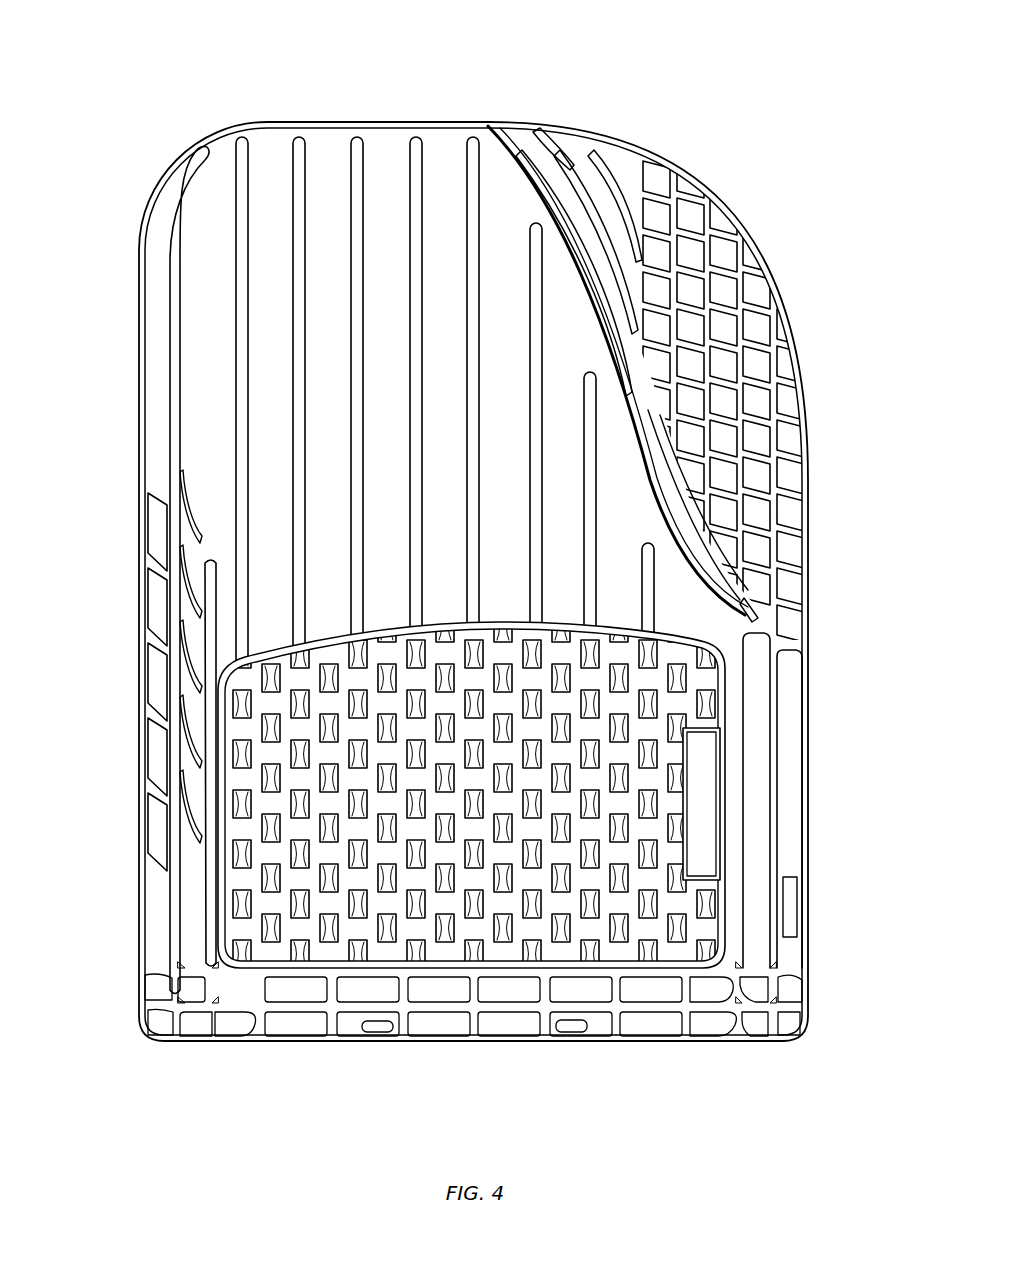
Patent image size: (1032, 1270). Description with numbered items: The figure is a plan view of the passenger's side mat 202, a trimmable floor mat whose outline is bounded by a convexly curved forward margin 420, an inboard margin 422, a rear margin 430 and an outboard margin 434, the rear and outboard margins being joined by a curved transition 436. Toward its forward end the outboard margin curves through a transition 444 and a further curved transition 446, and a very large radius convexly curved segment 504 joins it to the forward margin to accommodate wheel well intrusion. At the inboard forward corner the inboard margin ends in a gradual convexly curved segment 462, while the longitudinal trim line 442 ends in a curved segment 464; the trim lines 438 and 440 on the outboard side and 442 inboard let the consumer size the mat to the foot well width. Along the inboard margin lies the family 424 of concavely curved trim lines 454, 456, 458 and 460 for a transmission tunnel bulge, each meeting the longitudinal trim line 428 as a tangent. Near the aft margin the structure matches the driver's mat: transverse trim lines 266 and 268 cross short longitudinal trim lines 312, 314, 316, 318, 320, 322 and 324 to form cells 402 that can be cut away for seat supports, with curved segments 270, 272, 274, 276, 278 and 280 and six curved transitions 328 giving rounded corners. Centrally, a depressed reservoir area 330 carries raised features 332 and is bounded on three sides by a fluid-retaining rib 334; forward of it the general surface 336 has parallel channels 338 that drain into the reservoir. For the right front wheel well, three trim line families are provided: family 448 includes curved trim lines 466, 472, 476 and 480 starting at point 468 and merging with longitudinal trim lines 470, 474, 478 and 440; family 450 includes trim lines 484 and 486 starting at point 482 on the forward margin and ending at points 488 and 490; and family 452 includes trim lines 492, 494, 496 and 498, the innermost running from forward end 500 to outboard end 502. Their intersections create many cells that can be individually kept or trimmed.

The passenger's side mat 202 is at (276, 58).
The forward margin 420 is at (385, 122).
The forward end 500 is at (495, 128).
The curved trim line 492 is at (520, 130).
The point 482 is at (545, 135).
The curved trim line 496 is at (596, 160).
The curved trim line 494 is at (585, 215).
The curved trim line 498 is at (690, 200).
The curved transition 446 is at (750, 235).
The convexly curved segment 504 is at (770, 250).
The longitudinal trim line 440 is at (740, 285).
The third family of curved trim lines 452 is at (812, 314).
The straight longitudinal trim line 478 is at (795, 348).
The transition 444 is at (812, 372).
The outboard end 502 is at (802, 402).
The longitudinal straight trim line 474 is at (740, 447).
The point 490 is at (810, 472).
The trim line 476 is at (748, 517).
The point 488 is at (810, 580).
The curved trim line 480 is at (760, 607).
The point 468 is at (782, 680).
The outboard margin 434 is at (810, 745).
The longitudinal cut line 438 is at (782, 800).
The curved transition 436 is at (792, 1030).
The rib 334 is at (222, 830).
The curved transitions 328 is at (800, 1000).
The cells 402 is at (732, 1010).
The short longitudinal trim line 322 is at (630, 1030).
The short longitudinal trim line 324 is at (690, 1032).
The short longitudinal trim line 320 is at (505, 1022).
The rear margin 430 is at (525, 1002).
The short longitudinal trim line 318 is at (452, 1032).
The short longitudinal trim line 316 is at (430, 1032).
The transverse trim line 266 is at (385, 1022).
The transverse trim line 268 is at (352, 1032).
The short longitudinal trim line 314 is at (320, 1040).
The short longitudinal trim line 312 is at (290, 1032).
The curved segment 274 is at (250, 1040).
The curved segment 280 is at (230, 1032).
The curved segment 278 is at (200, 1022).
The curved segment 276 is at (150, 1012).
The forwardly curving segment 270 is at (175, 987).
The curved segment 272 is at (185, 945).
The longitudinal trim line 428 is at (200, 880).
The family of concavely curved trim lines 424 is at (135, 760).
The first curved trim line 454 is at (160, 735).
The curved trim line 456 is at (160, 660).
The curved trim line 458 is at (165, 590).
The curved trim line 460 is at (160, 510).
The inboard margin 422 is at (145, 396).
The longitudinal trim line 442 is at (175, 302).
The convexly curved segment 462 is at (165, 180).
The curved segment 464 is at (196, 136).
The channels 338 is at (355, 440).
The general surface 336 is at (470, 412).
The raised features 332 is at (300, 655).
The reservoir area 330 is at (471, 765).
The second family of curved trim lines 450 is at (556, 272).
The curved trim line 484 is at (576, 300).
The curved trim line 486 is at (616, 318).
The longitudinal trim line 470 is at (598, 430).
The trim line 472 is at (625, 515).
The first curved trim line 466 is at (645, 595).
The wheel well curved trim line family 448 is at (682, 600).